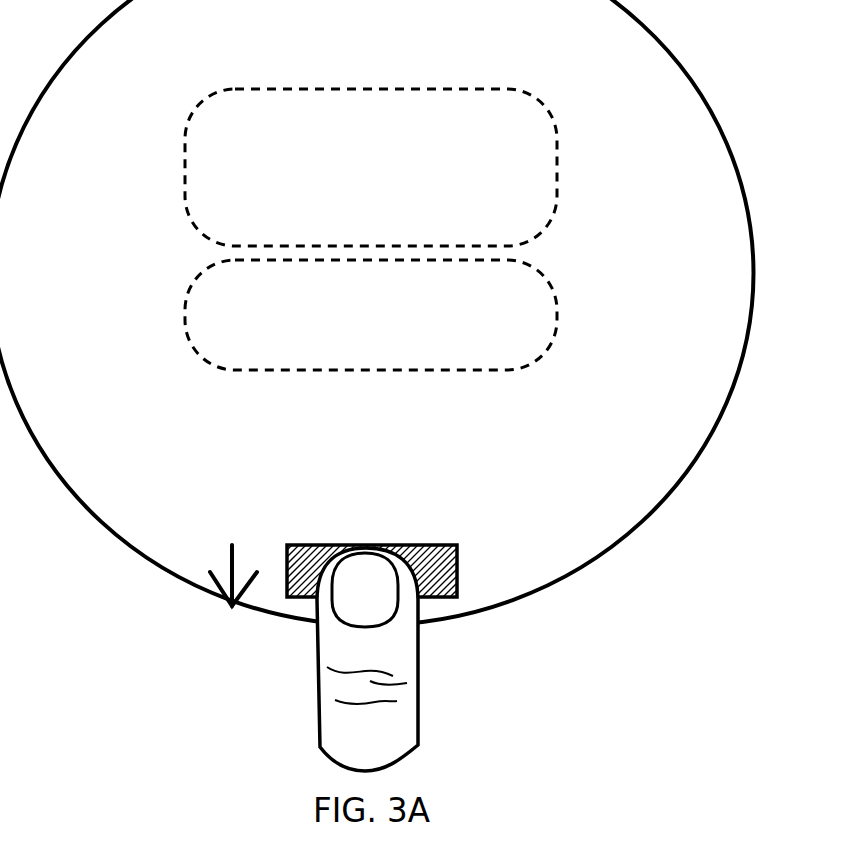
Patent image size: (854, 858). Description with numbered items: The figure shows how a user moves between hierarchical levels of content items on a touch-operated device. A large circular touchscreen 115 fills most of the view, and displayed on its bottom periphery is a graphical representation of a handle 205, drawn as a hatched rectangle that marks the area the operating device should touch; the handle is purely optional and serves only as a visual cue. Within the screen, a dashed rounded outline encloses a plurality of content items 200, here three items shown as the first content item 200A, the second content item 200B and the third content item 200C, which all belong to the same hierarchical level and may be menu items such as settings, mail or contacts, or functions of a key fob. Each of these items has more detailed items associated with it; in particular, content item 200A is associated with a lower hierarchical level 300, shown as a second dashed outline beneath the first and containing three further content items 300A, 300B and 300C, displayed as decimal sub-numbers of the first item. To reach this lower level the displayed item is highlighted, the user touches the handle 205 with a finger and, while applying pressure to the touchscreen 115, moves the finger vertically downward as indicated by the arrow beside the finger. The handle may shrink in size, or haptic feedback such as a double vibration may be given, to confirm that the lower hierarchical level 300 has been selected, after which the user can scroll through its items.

The touchscreen 115 is at (677, 55).
The plurality of content items 200 is at (372, 90).
The content item "1" 200A is at (253, 143).
The content item "2" 200B is at (393, 140).
The content item "3" 200C is at (532, 158).
The lower hierarchical level 300 is at (185, 314).
The content item "1.1" 300A is at (257, 345).
The content item "1.2" 300B is at (370, 345).
The content item "1.3" 300C is at (486, 345).
The graphical representation of a handle 205 is at (458, 567).